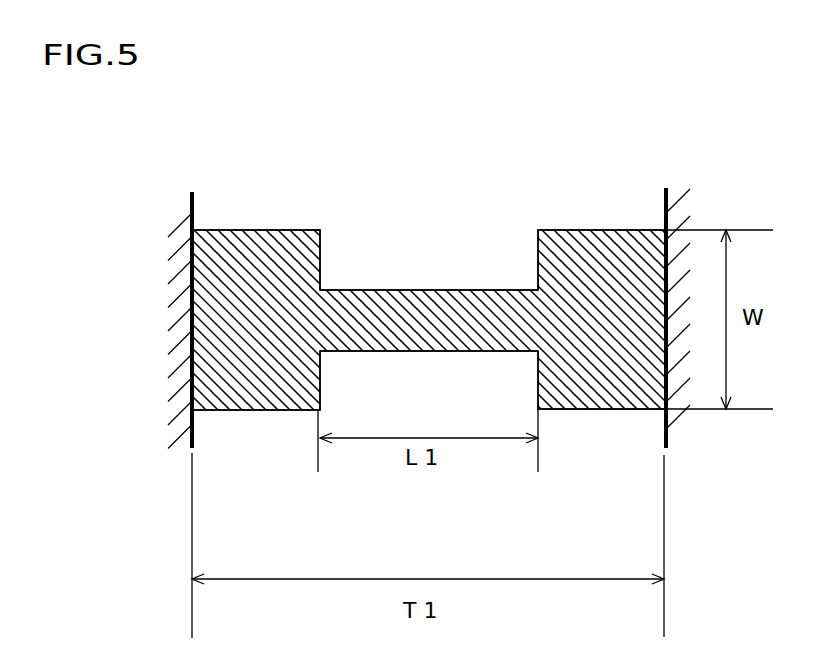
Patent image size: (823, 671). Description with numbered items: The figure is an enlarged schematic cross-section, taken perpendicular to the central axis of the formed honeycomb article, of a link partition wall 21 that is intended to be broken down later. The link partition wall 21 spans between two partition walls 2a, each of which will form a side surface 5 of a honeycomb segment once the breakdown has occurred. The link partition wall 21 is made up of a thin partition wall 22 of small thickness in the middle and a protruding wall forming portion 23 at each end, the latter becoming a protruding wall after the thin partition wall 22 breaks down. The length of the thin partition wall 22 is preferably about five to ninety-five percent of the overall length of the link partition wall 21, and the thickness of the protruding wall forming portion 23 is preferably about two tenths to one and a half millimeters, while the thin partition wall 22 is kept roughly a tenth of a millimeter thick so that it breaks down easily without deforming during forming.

The partition wall forming the side surface 2a is at (180, 222).
The side surface 5 is at (192, 430).
The link partition wall 21 is at (558, 229).
The thin partition wall 22 is at (421, 287).
The protruding wall forming portion 23 is at (300, 230).